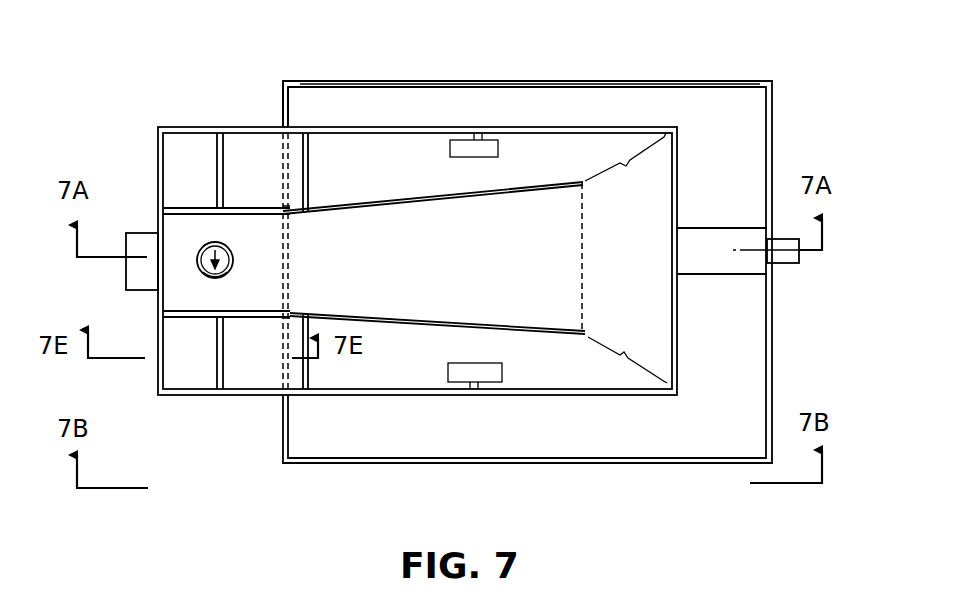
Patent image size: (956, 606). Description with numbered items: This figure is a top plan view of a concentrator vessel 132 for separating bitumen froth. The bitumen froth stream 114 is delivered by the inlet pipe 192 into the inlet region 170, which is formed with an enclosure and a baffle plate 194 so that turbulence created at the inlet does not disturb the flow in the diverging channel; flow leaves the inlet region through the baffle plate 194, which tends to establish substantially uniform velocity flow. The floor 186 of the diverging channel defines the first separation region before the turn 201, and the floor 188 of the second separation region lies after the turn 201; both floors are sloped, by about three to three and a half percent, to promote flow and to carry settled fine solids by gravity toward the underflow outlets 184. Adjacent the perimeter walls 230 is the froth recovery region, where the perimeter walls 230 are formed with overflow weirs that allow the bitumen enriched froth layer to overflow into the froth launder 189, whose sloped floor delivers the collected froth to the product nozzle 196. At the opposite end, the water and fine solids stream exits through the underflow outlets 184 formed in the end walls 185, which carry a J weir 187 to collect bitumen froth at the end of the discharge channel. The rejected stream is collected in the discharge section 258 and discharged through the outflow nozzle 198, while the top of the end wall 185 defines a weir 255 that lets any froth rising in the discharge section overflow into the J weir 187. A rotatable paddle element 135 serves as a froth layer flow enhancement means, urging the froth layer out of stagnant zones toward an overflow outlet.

The bitumen froth stream 114 is at (216, 243).
The housing 132 is at (566, 72).
The rotatable paddle element 135 is at (493, 135).
The inlet region 170 is at (157, 216).
The underflow outlets 184 is at (281, 150).
The end walls 185 is at (301, 165).
The floor 186 is at (524, 228).
The J weir 187 is at (301, 167).
The floor 188 is at (396, 176).
The froth launder 189 is at (722, 98).
The inlet pipe 192 is at (224, 272).
The baffle plate 194 is at (290, 286).
The product nozzle 196 is at (790, 265).
The outflow nozzle 198 is at (126, 243).
The turn 201 is at (614, 258).
The perimeter walls 230 is at (430, 125).
The weir 255 is at (280, 200).
The discharge section 258 is at (178, 167).